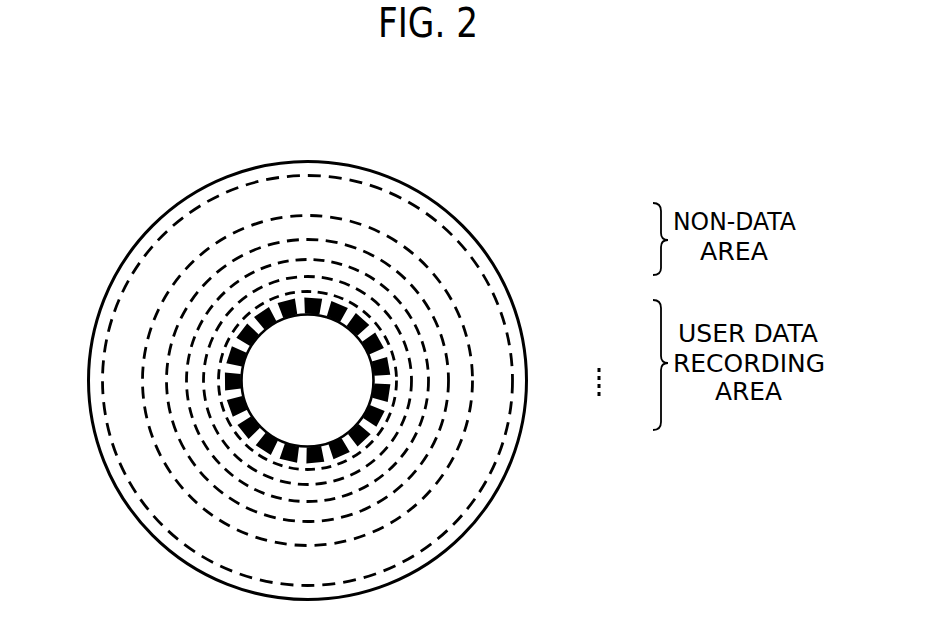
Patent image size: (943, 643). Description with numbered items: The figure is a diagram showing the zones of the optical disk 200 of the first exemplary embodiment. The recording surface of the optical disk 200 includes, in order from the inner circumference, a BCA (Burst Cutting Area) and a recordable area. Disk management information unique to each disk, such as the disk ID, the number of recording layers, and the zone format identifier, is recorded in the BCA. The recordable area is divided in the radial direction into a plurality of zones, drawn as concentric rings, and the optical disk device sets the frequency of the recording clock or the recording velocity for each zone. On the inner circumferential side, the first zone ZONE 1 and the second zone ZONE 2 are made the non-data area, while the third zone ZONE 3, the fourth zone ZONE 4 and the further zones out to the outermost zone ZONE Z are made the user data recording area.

The optical disk 200 is at (423, 195).
The Burst Cutting Area BCA is at (230, 385).
The zone 1 ZONE 1 is at (377, 313).
The zone 2 ZONE 2 is at (412, 335).
The zone 3 ZONE 3 is at (435, 362).
The zone 4 ZONE 4 is at (462, 388).
The zone Z ZONE Z is at (512, 437).